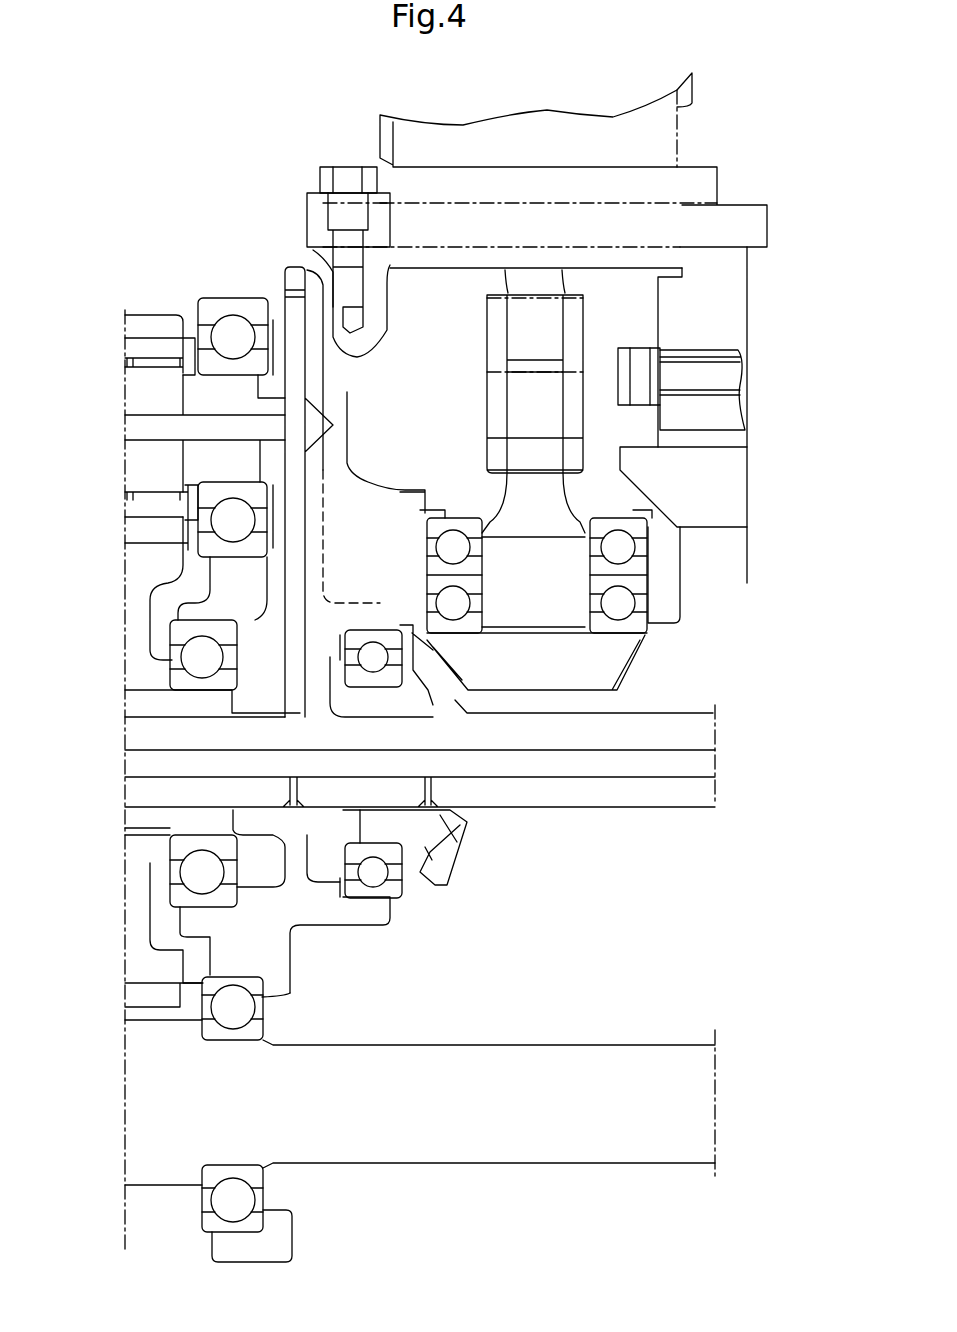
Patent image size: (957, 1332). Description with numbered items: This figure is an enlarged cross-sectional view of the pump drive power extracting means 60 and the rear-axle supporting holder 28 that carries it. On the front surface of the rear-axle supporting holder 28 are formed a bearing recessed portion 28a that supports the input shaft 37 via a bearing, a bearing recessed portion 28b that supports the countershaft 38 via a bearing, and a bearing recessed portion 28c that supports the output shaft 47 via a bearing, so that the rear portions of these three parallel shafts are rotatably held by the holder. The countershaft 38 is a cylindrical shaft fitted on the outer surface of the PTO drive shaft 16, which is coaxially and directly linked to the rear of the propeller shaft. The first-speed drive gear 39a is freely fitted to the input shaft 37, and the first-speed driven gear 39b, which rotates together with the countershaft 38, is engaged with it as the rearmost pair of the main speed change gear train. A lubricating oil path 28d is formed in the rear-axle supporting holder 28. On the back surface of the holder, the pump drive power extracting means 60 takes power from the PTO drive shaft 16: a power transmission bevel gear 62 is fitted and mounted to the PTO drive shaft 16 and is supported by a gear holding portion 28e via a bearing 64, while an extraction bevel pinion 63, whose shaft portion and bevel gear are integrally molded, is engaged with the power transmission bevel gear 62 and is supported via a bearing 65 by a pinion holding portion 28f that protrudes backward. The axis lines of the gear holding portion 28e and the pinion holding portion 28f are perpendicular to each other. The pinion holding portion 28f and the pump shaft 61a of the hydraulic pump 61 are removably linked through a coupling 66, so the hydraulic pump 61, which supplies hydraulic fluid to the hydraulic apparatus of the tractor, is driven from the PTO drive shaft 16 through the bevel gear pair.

The PTO drive shaft 16 is at (660, 805).
The rear-axle supporting holder 28 is at (279, 246).
The bearing recessed portion 28a is at (237, 305).
The bearing recessed portion 28b is at (185, 633).
The bearing recessed portion 28c is at (180, 977).
The lubricating oil path 28d is at (293, 698).
The gear holding portion 28e is at (387, 628).
The pinion holding portion 28f is at (668, 607).
The input shaft 37 is at (155, 385).
The countershaft 38 is at (148, 822).
The first-speed drive gear 39a is at (170, 320).
The first-speed driven gear 39b is at (148, 548).
The output shaft 47 is at (140, 1050).
The pump drive power extracting means 60 is at (558, 860).
The hydraulic pump 61 is at (692, 133).
The pump shaft 61a is at (545, 330).
The power transmission bevel gear 62 is at (425, 847).
The extraction bevel pinion 63 is at (598, 670).
The bearing 64 is at (367, 887).
The bearing 65 is at (620, 548).
The coupling 66 is at (572, 432).